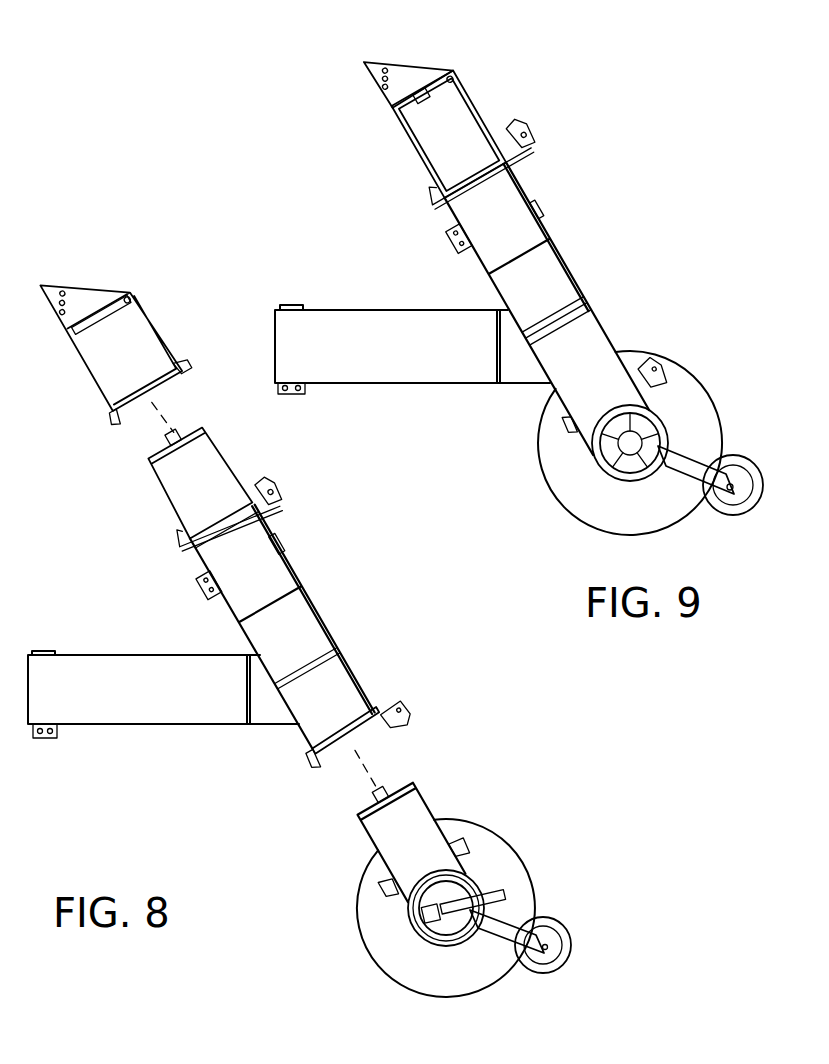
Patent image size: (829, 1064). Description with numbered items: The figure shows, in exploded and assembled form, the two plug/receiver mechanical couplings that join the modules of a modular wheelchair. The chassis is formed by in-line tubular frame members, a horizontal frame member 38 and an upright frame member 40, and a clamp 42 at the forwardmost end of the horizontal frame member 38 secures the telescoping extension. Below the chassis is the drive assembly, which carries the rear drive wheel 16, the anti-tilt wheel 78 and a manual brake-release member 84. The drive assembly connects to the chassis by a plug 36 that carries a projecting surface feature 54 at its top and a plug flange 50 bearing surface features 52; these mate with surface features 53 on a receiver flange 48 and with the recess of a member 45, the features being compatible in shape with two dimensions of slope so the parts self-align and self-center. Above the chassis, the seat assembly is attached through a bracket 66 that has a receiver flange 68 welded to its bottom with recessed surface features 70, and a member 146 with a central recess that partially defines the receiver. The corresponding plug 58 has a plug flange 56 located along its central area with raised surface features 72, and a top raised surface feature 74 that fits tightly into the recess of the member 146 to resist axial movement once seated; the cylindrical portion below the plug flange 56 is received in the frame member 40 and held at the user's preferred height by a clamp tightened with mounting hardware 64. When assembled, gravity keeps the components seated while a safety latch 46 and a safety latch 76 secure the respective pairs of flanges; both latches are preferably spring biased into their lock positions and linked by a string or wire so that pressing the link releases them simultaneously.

In FIG. 8, the rear drive wheel 16 is at (462, 982).
In FIG. 8, the plug 36 is at (413, 817).
In FIG. 8, the horizontal frame member 38 is at (170, 728).
In FIG. 9, the horizontal frame member 38 is at (388, 373).
In FIG. 8, the frame member 40 is at (303, 620).
In FIG. 9, the frame member 40 is at (555, 280).
In FIG. 8, the clamp 42 is at (45, 738).
In FIG. 8, the member 45 is at (330, 667).
In FIG. 8, the latch 46 is at (420, 721).
In FIG. 9, the latch 46 is at (657, 378).
In FIG. 8, the receiver flange 48 is at (337, 762).
In FIG. 8, the plug flange 50 is at (470, 853).
In FIG. 8, the surface features 52 is at (467, 843).
In FIG. 8, the surface features 53 is at (310, 758).
In FIG. 8, the projecting surface feature 54 is at (385, 790).
In FIG. 9, the projecting surface feature 54 is at (563, 310).
In FIG. 8, the plug flange 56 is at (213, 540).
In FIG. 8, the plug 58 is at (177, 487).
In FIG. 8, the mounting hardware 64 is at (207, 582).
In FIG. 8, the bracket 66 is at (107, 357).
In FIG. 8, the receiver flange 68 is at (123, 417).
In FIG. 8, the recessed surface features 70 is at (182, 366).
In FIG. 8, the raised surface features 72 is at (185, 532).
In FIG. 8, the top raised surface feature 74 is at (171, 433).
In FIG. 9, the top raised surface feature 74 is at (422, 98).
In FIG. 8, the safety latch 76 is at (266, 480).
In FIG. 9, the safety latch 76 is at (520, 135).
In FIG. 8, the anti-tilt wheel 78 is at (572, 935).
In FIG. 8, the brake-release member 84 is at (518, 884).
In FIG. 8, the member 146 is at (116, 310).